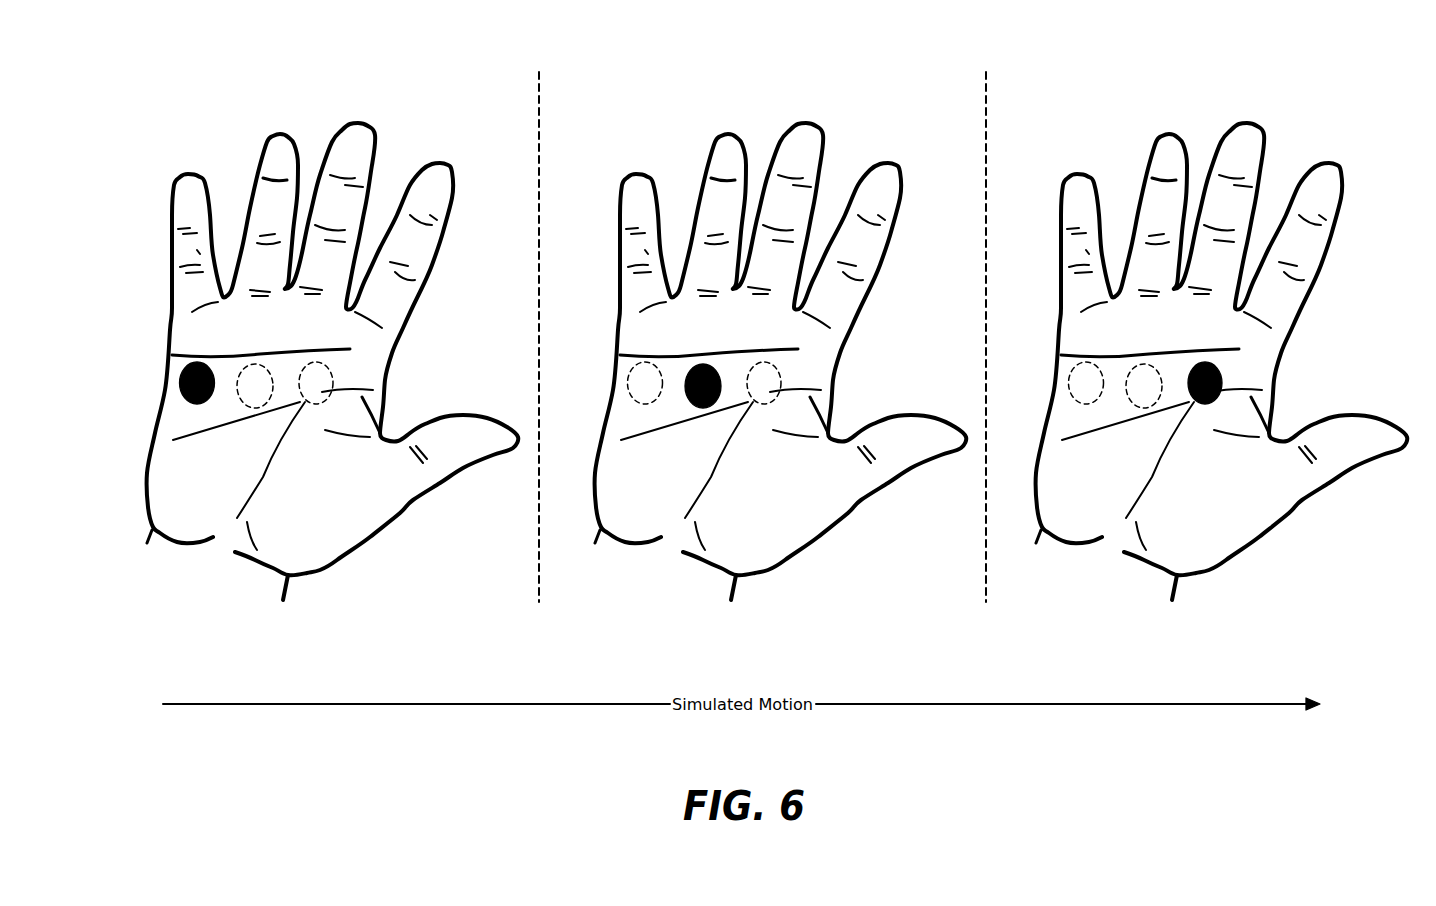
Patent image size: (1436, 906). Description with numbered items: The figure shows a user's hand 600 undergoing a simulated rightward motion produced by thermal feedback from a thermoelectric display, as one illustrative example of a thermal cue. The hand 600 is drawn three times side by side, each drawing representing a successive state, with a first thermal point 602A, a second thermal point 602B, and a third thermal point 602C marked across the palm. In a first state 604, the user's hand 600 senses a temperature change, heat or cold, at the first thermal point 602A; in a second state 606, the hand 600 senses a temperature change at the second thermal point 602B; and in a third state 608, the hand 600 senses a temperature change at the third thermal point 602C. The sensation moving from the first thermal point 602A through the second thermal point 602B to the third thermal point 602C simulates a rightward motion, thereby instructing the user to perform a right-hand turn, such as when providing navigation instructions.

The user's hand 600 is at (775, 345).
The first thermal point 602A is at (180, 384).
The second thermal point 602B is at (257, 363).
The third thermal point 602C is at (316, 361).
The first state 604 is at (244, 122).
The second state 606 is at (778, 345).
The third state 608 is at (1219, 345).